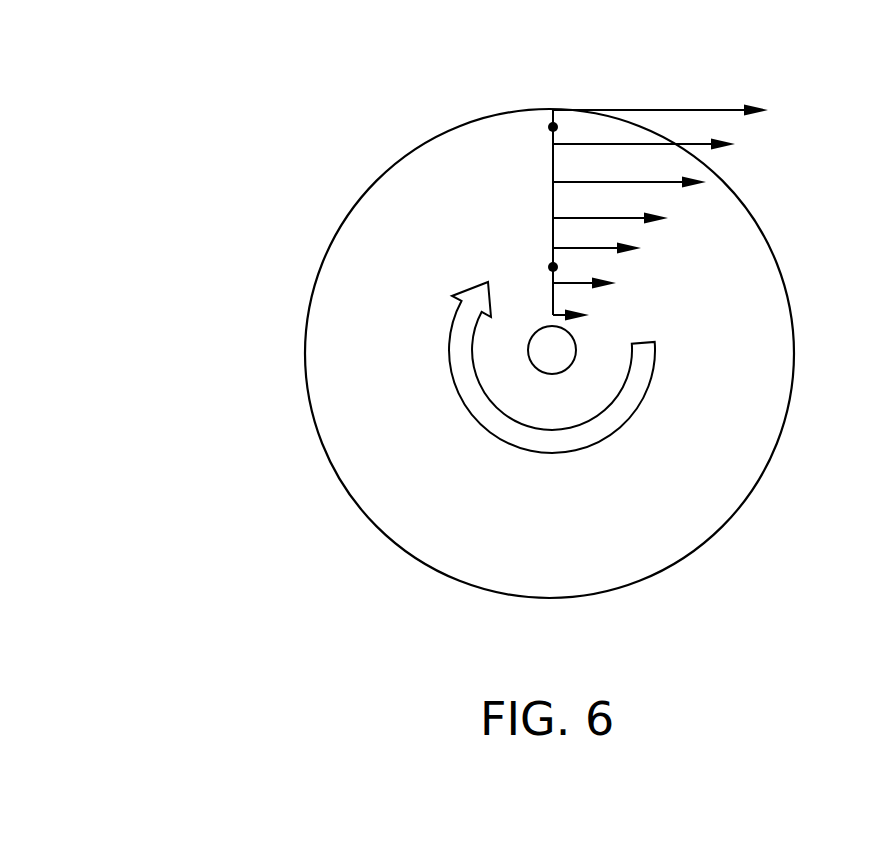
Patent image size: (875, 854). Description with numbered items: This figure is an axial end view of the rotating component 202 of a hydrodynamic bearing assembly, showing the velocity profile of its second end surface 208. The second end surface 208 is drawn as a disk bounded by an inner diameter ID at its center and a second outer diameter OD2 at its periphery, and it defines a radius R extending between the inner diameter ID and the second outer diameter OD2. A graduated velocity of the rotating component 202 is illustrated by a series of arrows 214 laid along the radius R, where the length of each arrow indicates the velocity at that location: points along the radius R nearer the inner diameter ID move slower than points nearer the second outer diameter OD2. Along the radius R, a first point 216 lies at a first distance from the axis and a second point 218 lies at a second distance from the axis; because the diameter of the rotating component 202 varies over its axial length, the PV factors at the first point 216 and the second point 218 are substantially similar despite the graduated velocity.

The rotating component 202 is at (178, 143).
The second end surface 208 is at (693, 513).
The arrows 214 is at (704, 70).
The first point 216 is at (553, 267).
The second point 218 is at (553, 127).
The second outer diameter OD2 is at (410, 147).
The inner diameter ID is at (552, 374).
The radius R is at (552, 199).